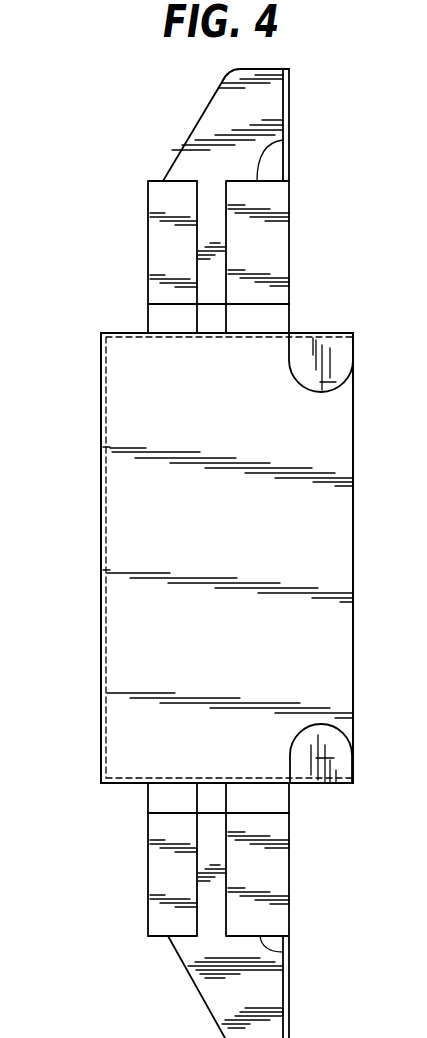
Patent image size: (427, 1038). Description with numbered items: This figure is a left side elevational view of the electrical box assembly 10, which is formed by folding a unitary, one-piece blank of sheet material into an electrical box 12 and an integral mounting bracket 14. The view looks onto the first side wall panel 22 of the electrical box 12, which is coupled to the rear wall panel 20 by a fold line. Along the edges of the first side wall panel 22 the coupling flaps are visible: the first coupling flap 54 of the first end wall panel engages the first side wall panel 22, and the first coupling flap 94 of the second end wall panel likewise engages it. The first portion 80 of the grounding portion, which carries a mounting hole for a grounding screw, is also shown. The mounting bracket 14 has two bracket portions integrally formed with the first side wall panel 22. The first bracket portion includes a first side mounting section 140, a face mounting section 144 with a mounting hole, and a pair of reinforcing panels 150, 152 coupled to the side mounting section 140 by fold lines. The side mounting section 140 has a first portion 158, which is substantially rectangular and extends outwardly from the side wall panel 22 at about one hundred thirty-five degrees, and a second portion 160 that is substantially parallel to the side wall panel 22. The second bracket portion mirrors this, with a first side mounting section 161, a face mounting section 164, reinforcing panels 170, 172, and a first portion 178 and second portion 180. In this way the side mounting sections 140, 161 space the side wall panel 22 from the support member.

The electrical box assembly 10 is at (93, 172).
The electrical box 12 is at (95, 372).
The mounting bracket 14 is at (304, 224).
The rear wall panel 20 is at (100, 558).
The first side wall panel 22 is at (237, 549).
The first coupling flap 54 is at (323, 395).
The first portion of grounding portion 80 is at (310, 768).
The first coupling flap 94 is at (323, 722).
The first side mounting section 140 is at (200, 112).
The face mounting section 144 is at (289, 88).
The reinforcing panel 150 is at (283, 140).
The reinforcing panel 152 is at (163, 180).
The first portion of side mounting section 158 is at (290, 313).
The second portion of side mounting section 160 is at (205, 254).
The first side mounting section 161 is at (207, 1024).
The face mounting section 164 is at (292, 1018).
The reinforcing panel 170 is at (290, 952).
The reinforcing panel 172 is at (180, 940).
The first portion of side mounting section 178 is at (291, 801).
The second portion of side mounting section 180 is at (290, 858).